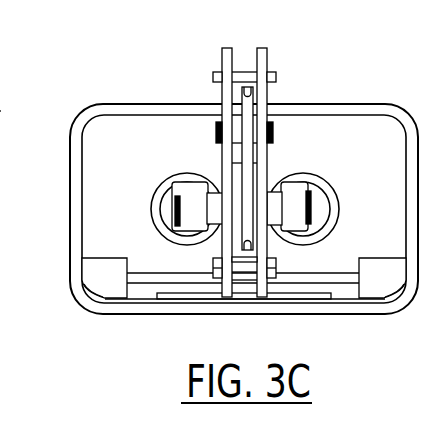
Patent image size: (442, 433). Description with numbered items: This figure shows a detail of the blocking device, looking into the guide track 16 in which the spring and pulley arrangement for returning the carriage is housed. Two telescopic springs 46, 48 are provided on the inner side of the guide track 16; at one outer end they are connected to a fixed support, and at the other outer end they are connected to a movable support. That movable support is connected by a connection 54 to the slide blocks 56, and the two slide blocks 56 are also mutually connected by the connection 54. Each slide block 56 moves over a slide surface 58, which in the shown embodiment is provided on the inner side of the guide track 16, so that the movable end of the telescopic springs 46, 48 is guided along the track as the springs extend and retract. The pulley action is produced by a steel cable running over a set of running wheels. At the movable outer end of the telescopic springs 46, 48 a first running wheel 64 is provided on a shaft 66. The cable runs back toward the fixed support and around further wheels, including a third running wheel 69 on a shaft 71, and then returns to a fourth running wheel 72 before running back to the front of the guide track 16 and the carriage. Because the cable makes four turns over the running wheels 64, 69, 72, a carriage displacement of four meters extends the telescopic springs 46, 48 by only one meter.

The guide track 16 is at (73, 128).
The telescopic spring 46 is at (178, 172).
The telescopic spring 48 is at (298, 171).
The connection 54 is at (333, 280).
The slide block 56 is at (115, 268).
The slide surface 58 is at (96, 327).
The first running wheel 64 is at (237, 235).
The shaft 66 is at (250, 218).
The third running wheel 69 is at (251, 105).
The shaft 71 is at (237, 133).
The fourth running wheel 72 is at (10, 77).